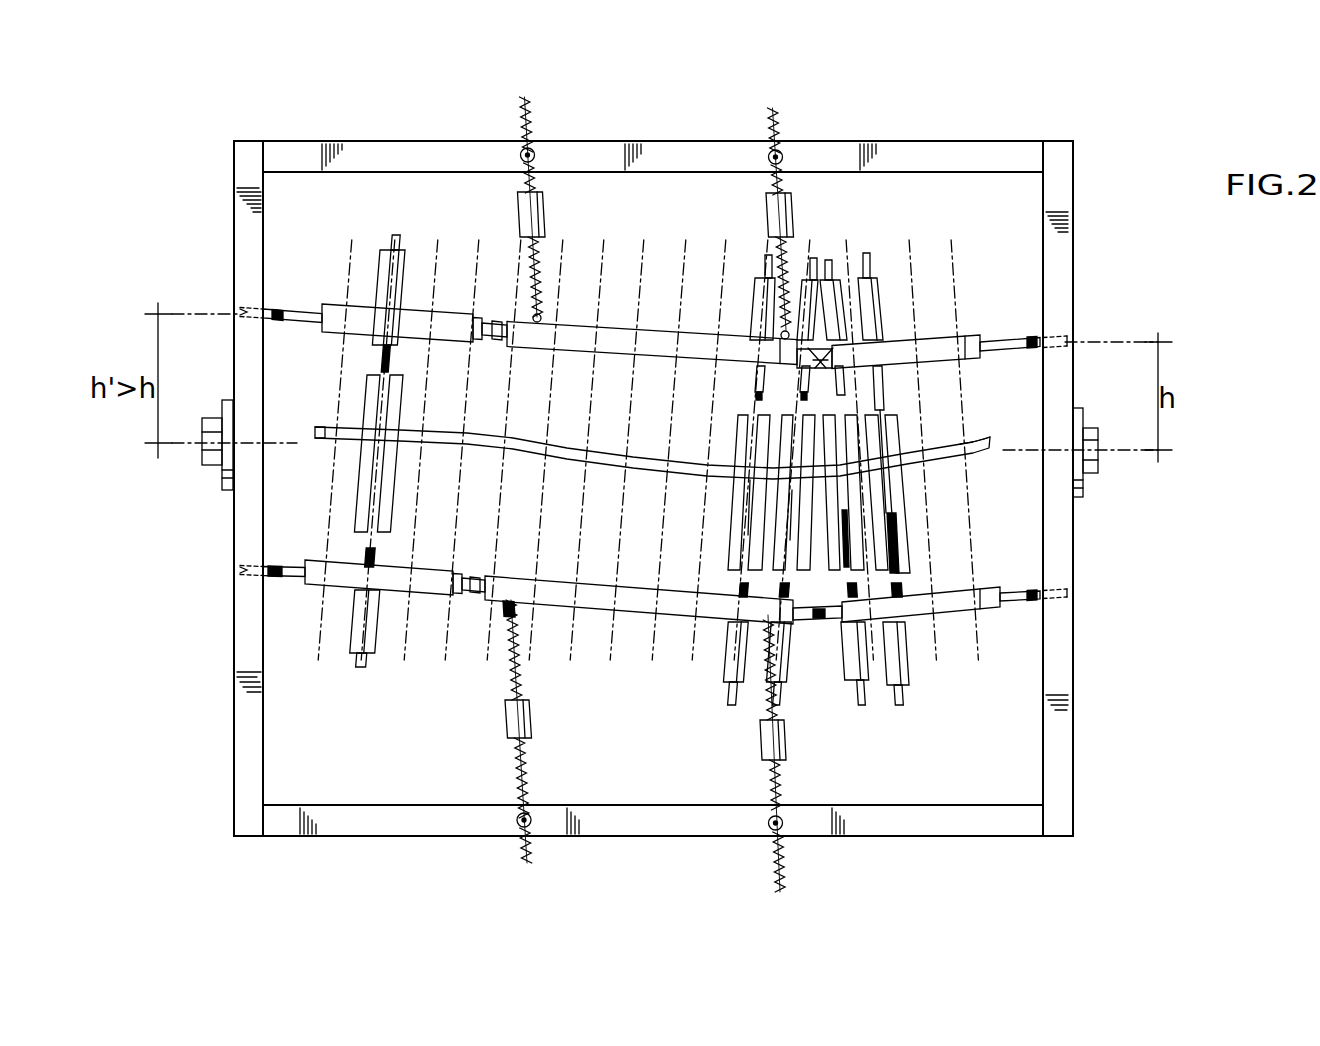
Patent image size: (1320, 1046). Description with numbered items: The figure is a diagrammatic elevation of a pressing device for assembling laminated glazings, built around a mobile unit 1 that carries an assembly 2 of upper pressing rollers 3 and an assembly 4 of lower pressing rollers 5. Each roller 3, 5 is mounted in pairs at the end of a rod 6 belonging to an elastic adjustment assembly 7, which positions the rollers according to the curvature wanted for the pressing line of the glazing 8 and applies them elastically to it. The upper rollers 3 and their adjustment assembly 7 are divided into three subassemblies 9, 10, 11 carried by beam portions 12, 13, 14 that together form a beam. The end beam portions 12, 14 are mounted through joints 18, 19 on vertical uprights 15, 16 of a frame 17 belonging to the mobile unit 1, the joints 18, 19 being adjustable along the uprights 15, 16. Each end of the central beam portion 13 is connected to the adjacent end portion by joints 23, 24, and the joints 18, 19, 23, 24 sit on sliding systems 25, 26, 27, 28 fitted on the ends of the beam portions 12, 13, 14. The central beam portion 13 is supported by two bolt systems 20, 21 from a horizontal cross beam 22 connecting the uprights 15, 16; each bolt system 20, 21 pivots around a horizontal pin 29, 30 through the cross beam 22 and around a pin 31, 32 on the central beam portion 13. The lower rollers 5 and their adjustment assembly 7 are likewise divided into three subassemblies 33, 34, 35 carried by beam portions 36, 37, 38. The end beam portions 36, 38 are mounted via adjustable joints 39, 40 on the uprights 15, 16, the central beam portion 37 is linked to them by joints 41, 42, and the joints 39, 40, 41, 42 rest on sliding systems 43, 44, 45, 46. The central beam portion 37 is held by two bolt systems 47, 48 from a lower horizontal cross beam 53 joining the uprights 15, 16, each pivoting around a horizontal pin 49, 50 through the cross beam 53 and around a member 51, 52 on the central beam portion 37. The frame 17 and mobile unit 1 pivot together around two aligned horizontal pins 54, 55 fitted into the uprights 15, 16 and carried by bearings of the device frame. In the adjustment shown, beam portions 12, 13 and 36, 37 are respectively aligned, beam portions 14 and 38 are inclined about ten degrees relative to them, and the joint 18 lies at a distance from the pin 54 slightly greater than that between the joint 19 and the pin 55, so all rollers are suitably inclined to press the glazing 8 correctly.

The mobile unit 1 is at (1015, 210).
The assembly of upper pressing rollers 2 is at (940, 430).
The upper pressing rollers 3 is at (908, 445).
The assembly of lower pressing rollers 4 is at (942, 526).
The lower pressing rollers 5 is at (913, 548).
The rod 6 is at (884, 385).
The elastic adjustment assembly 7 is at (878, 305).
The glazing 8 is at (318, 436).
The subassembly 9 is at (421, 450).
The subassembly 10 is at (565, 450).
The subassembly 11 is at (585, 450).
The beam portion 12 is at (388, 303).
The central beam portion 13 is at (607, 335).
The beam portion 14 is at (976, 338).
The vertical upright 15 is at (238, 193).
The vertical upright 16 is at (1073, 715).
The frame 17 is at (850, 165).
The joint 18 is at (283, 316).
The joint 19 is at (1055, 340).
The bolt system 20 is at (524, 100).
The bolt system 21 is at (775, 108).
The horizontal cross beam 22 is at (596, 150).
The joint 23 is at (502, 330).
The joint 24 is at (815, 280).
The sliding system 25 is at (296, 325).
The sliding system 26 is at (483, 325).
The sliding system 27 is at (868, 275).
The sliding system 28 is at (1012, 335).
The horizontal pin 29 is at (533, 149).
The horizontal pin 30 is at (781, 151).
The pin 31 is at (541, 300).
The pin 32 is at (760, 305).
The subassembly 33 is at (335, 450).
The subassembly 34 is at (587, 450).
The subassembly 35 is at (912, 450).
The beam portion 36 is at (373, 521).
The central beam portion 37 is at (683, 607).
The beam portion 38 is at (895, 644).
The joint 39 is at (262, 568).
The joint 40 is at (1035, 598).
The joint 41 is at (470, 592).
The joint 42 is at (854, 644).
The sliding system 43 is at (290, 580).
The sliding system 44 is at (492, 602).
The sliding system 45 is at (780, 644).
The sliding system 46 is at (1000, 614).
The bolt system 47 is at (532, 863).
The bolt system 48 is at (778, 885).
The horizontal pin 49 is at (520, 826).
The horizontal pin 50 is at (781, 829).
The pivot member on central beam portion 51 is at (515, 613).
The pivot member on central beam portion 52 is at (737, 644).
The horizontal cross beam 53 is at (355, 825).
The horizontal pin 54 is at (177, 445).
The horizontal pin 55 is at (1128, 453).